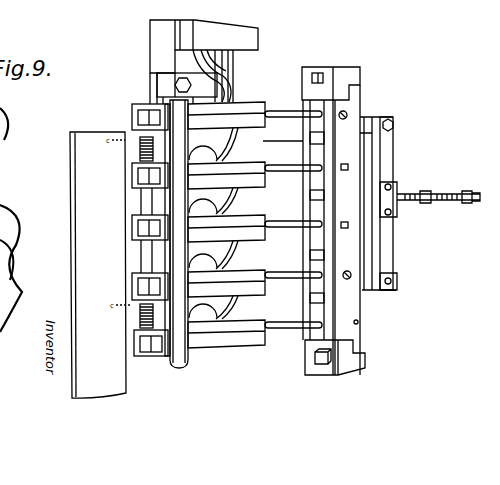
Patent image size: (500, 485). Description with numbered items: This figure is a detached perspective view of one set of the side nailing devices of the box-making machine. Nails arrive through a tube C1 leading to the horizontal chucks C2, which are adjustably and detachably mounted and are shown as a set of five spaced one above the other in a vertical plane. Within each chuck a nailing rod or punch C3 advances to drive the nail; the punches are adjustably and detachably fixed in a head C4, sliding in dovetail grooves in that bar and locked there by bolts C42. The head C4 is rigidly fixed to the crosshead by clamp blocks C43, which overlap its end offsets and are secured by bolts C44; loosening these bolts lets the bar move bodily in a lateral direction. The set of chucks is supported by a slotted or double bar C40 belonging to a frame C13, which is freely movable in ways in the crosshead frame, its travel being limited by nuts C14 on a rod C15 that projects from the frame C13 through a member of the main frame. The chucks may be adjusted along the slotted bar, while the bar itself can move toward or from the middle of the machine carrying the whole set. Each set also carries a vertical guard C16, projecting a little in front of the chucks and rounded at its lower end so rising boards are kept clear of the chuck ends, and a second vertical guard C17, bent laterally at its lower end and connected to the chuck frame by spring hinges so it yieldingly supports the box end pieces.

The tube C1 is at (223, 83).
The horizontal chuck C2 is at (258, 126).
The nailing rod C3 is at (288, 176).
The head C4 is at (347, 260).
The frame C13 is at (368, 120).
The nut C14 is at (462, 188).
The rod C15 is at (437, 203).
The vertical guard C16 is at (173, 348).
The second vertical guard C17 is at (83, 253).
The slotted bar C40 is at (150, 101).
The bolt C42 is at (362, 322).
The clamp block C43 is at (350, 73).
The bolt C44 is at (315, 361).